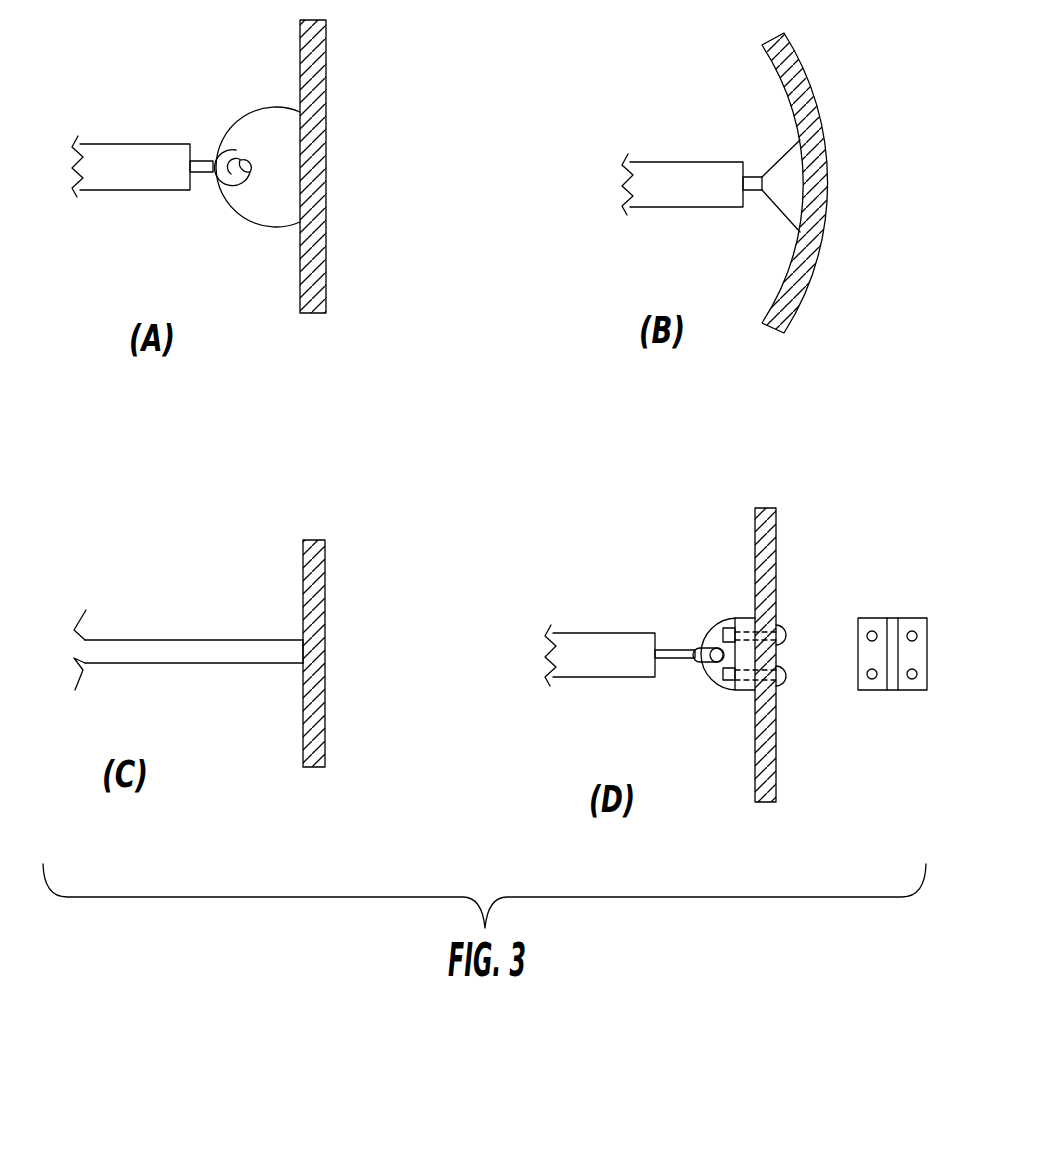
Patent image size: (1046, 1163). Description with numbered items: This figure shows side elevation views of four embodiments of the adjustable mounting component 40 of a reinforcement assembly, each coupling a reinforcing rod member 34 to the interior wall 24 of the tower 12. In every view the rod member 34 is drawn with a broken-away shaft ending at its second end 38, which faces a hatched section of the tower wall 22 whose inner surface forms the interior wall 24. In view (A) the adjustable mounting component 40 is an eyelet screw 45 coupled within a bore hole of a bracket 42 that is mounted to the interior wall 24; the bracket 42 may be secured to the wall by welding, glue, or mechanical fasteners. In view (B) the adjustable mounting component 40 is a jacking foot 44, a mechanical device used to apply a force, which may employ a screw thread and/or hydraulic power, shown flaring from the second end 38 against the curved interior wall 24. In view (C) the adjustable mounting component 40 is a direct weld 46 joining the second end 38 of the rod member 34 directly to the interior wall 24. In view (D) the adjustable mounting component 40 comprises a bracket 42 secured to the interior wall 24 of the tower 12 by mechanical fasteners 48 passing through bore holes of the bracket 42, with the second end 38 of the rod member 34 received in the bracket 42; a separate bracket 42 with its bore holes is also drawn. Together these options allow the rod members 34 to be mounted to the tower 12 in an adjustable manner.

The tower 12 is at (336, 258).
The panel hatched body 22 is at (326, 108).
The interior wall 24 is at (300, 72).
The reinforcing rod member 34 is at (102, 132).
The second end 38 is at (178, 191).
The adjustable mounting component 40 is at (236, 212).
The bracket 42 is at (272, 223).
The jacking foot 44 is at (775, 209).
The eyelet screw 45 is at (220, 151).
The direct weld 46 is at (302, 664).
The fastener 48 is at (786, 630).